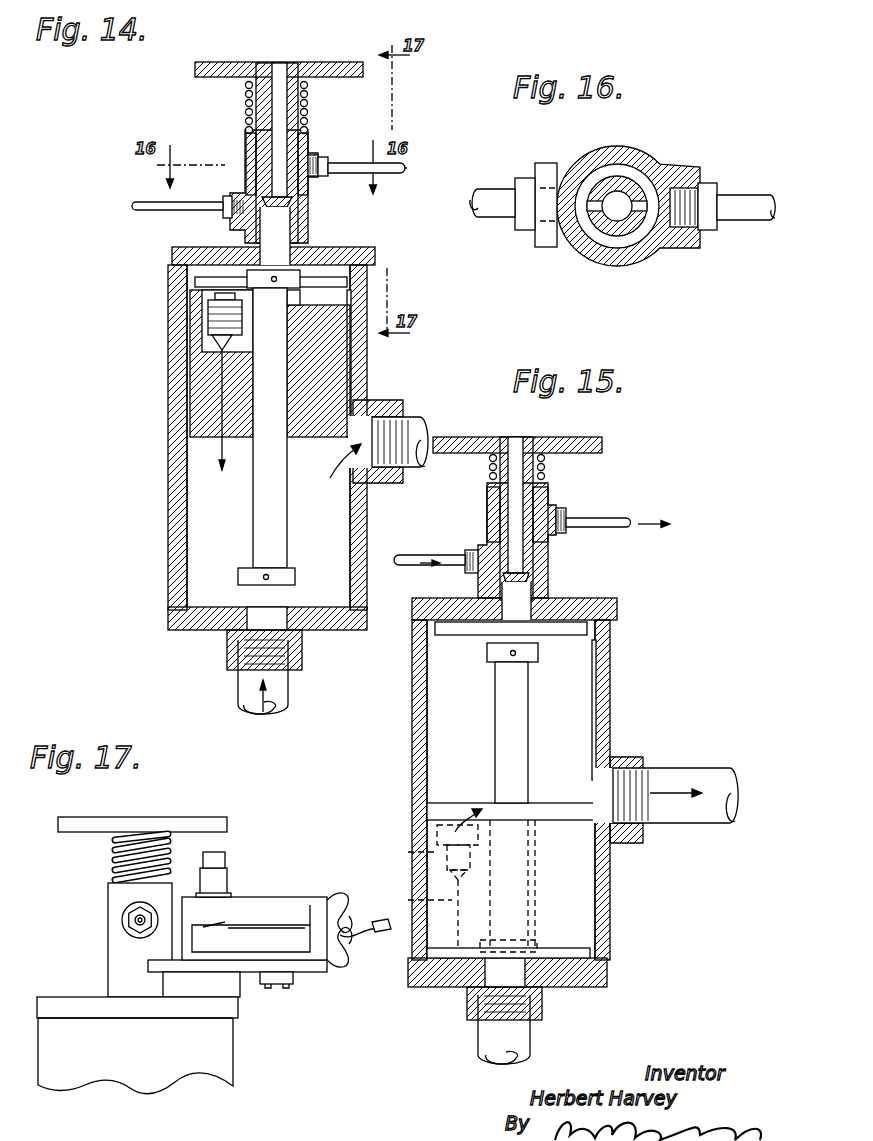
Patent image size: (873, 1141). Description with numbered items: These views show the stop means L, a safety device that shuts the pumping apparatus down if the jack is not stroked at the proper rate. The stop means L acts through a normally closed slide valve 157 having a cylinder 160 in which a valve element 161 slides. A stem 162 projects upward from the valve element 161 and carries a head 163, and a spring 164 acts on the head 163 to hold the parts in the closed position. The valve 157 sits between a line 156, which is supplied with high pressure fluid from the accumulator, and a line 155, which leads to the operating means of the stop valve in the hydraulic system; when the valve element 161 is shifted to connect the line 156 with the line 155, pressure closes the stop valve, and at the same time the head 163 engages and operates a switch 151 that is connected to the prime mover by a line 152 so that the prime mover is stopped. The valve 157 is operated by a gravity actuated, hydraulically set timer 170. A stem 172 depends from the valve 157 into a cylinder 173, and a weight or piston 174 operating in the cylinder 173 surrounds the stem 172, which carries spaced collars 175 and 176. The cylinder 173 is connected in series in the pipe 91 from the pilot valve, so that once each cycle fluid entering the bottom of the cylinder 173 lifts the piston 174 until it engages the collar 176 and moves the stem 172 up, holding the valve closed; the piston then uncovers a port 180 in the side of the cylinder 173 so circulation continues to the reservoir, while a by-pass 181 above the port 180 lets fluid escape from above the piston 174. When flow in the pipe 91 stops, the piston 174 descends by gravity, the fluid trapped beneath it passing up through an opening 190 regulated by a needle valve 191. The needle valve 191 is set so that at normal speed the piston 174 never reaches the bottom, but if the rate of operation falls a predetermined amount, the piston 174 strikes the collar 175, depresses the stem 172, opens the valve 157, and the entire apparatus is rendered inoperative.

In FIG. 14, the pipe 91 is at (238, 690).
In FIG. 15, the pipe 91 is at (712, 775).
In FIG. 17, the switch 151 is at (253, 921).
In FIG. 17, the line 152 is at (373, 945).
In FIG. 14, the line 155 is at (356, 153).
In FIG. 16, the line 155 is at (740, 222).
In FIG. 15, the line 155 is at (630, 521).
In FIG. 17, the line 155 is at (126, 920).
In FIG. 14, the line 156 is at (152, 211).
In FIG. 16, the line 156 is at (497, 213).
In FIG. 15, the line 156 is at (445, 556).
In FIG. 14, the valve 157 is at (318, 208).
In FIG. 16, the valve 157 is at (602, 268).
In FIG. 15, the valve 157 is at (552, 580).
In FIG. 17, the valve 157 is at (128, 970).
In FIG. 14, the cylinder 160 is at (250, 180).
In FIG. 15, the cylinder 160 is at (487, 504).
In FIG. 14, the valve element 161 is at (256, 150).
In FIG. 15, the valve element 161 is at (492, 533).
In FIG. 14, the stem 162 is at (256, 95).
In FIG. 15, the stem 162 is at (541, 441).
In FIG. 14, the head 163 is at (338, 50).
In FIG. 15, the head 163 is at (602, 447).
In FIG. 17, the head 163 is at (213, 800).
In FIG. 14, the spring 164 is at (309, 104).
In FIG. 15, the spring 164 is at (550, 474).
In FIG. 17, the spring 164 is at (118, 853).
In FIG. 14, the timer 170 is at (173, 478).
In FIG. 15, the timer 170 is at (509, 820).
In FIG. 17, the timer 170 is at (70, 1053).
In FIG. 14, the stem 172 is at (275, 364).
In FIG. 15, the stem 172 is at (510, 748).
In FIG. 14, the cylinder 173 is at (168, 537).
In FIG. 15, the cylinder 173 is at (412, 772).
In FIG. 17, the cylinder 173 is at (212, 1057).
In FIG. 14, the weight 174 is at (192, 406).
In FIG. 15, the weight 174 is at (556, 838).
In FIG. 14, the collar 175 is at (240, 570).
In FIG. 15, the collar 175 is at (537, 944).
In FIG. 14, the collar 176 is at (190, 273).
In FIG. 15, the collar 176 is at (536, 662).
In FIG. 14, the port 180 is at (370, 406).
In FIG. 15, the port 180 is at (607, 844).
In FIG. 14, the by-pass 181 is at (366, 352).
In FIG. 15, the by-pass 181 is at (598, 730).
In FIG. 14, the opening 190 is at (220, 385).
In FIG. 15, the opening 190 is at (405, 897).
In FIG. 14, the needle valve 191 is at (204, 326).
In FIG. 15, the needle valve 191 is at (397, 850).
In FIG. 14, the stop means L is at (172, 363).
In FIG. 16, the stop means L is at (652, 157).
In FIG. 15, the stop means L is at (612, 694).
In FIG. 17, the stop means L is at (230, 877).